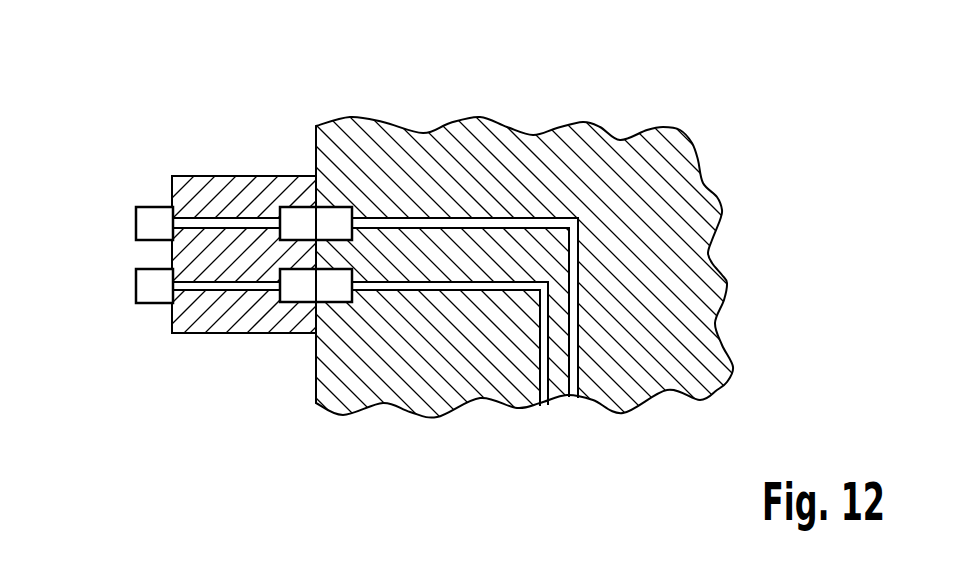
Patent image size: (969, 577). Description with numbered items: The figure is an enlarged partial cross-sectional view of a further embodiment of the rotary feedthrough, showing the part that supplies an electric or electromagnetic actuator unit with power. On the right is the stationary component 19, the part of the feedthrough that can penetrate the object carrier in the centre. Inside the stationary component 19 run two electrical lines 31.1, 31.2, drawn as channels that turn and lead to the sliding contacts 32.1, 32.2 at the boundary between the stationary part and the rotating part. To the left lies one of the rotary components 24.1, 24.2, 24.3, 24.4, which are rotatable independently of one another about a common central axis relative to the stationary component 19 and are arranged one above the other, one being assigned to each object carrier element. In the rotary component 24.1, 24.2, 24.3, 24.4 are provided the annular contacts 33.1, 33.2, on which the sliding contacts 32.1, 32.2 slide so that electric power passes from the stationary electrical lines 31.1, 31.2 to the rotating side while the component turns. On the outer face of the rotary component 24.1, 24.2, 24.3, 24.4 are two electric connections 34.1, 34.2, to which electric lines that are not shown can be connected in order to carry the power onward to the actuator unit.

The stationary component 19 is at (655, 202).
The rotary component 24.1 is at (241, 194).
The rotary component 24.2 is at (241, 255).
The rotary component 24.3 is at (241, 255).
The rotary component 24.4 is at (243, 197).
The electrical line 31.1 is at (545, 349).
The electrical line 31.2 is at (575, 272).
The sliding contact 32.1 is at (335, 285).
The sliding contact 32.2 is at (335, 220).
The annular contact 33.1 is at (295, 287).
The annular contact 33.2 is at (295, 228).
The electric connection 34.1 is at (153, 286).
The electric connection 34.2 is at (153, 222).